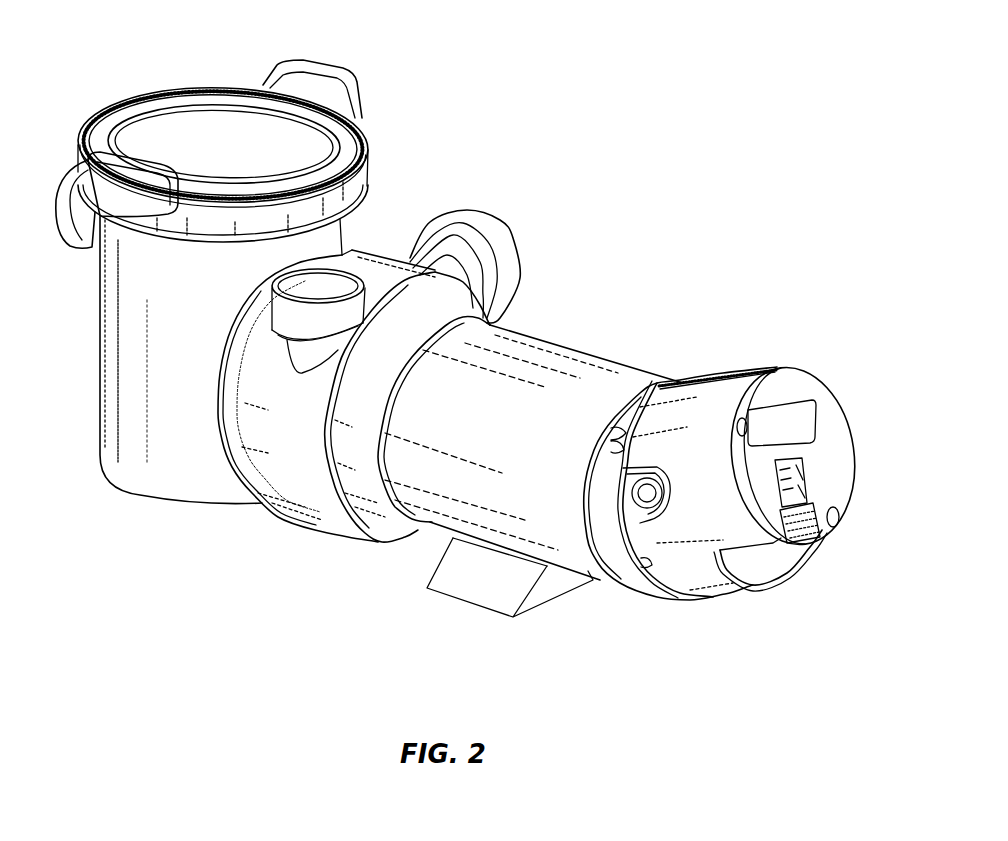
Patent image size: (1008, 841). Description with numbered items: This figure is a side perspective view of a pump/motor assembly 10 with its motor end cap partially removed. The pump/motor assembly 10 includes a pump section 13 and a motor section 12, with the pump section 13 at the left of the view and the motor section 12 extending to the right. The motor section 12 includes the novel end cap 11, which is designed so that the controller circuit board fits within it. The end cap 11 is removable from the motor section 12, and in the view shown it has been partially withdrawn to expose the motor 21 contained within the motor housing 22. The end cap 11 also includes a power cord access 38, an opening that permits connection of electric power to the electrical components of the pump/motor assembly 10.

The pump/motor assembly 10 is at (600, 90).
The end cap 11 is at (777, 383).
The motor section 12 is at (713, 357).
The pump section 13 is at (247, 558).
The motor 21 is at (620, 570).
The motor housing 22 is at (580, 525).
The power cord access 38 is at (642, 488).